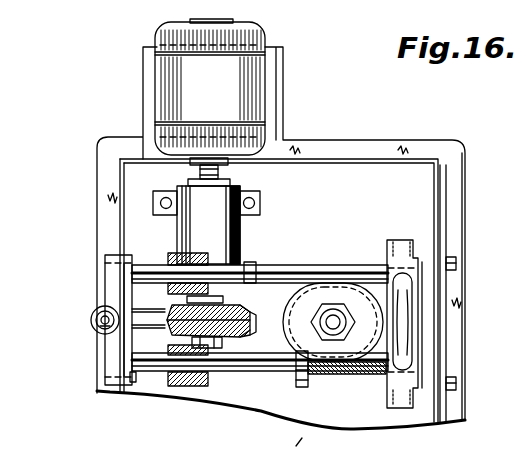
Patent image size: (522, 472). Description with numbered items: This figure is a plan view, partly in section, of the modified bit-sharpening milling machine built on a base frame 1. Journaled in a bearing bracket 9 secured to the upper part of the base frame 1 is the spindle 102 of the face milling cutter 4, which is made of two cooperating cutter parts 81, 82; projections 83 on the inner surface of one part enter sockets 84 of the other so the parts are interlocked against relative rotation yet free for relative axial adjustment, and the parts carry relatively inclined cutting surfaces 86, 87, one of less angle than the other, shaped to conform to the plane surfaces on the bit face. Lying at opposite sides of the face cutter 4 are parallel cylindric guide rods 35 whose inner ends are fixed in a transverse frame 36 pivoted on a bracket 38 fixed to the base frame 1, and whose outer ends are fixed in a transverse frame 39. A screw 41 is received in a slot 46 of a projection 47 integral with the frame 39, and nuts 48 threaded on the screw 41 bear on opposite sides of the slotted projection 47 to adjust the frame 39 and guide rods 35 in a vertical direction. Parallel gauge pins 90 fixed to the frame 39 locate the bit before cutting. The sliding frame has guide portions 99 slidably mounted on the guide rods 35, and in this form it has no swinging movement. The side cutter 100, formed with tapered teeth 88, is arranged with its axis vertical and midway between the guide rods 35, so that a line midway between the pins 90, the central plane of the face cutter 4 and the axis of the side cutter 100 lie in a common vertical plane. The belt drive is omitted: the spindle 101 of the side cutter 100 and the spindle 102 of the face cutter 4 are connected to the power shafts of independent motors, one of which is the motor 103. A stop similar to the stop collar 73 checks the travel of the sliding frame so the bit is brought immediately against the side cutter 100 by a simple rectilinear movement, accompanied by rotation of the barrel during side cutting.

The base frame 1 is at (97, 152).
The face milling cutter 4 is at (250, 270).
The bearing bracket 9 is at (256, 204).
The cylindric guide rods 35 is at (366, 267).
The transverse frame 36 is at (404, 308).
The bracket 38 is at (433, 250).
The transverse frame 39 is at (117, 361).
The screw 41 is at (105, 328).
The slot 46 is at (92, 321).
The projection 47 is at (100, 314).
The nuts 48 is at (100, 329).
The stop collar 73 is at (292, 453).
The cutter part 81 is at (251, 266).
The cutter part 82 is at (140, 378).
The projections 83 is at (258, 344).
The sockets 84 is at (250, 322).
The cutting surface 86 is at (262, 333).
The cutting surface 87 is at (250, 322).
The tapered teeth 88 is at (192, 346).
The gauge pins 90 is at (152, 308).
The guide portions 99 is at (170, 254).
The side cutter 100 is at (344, 266).
The spindle 101 is at (337, 333).
The spindle 102 is at (222, 178).
The motor 103 is at (180, 81).